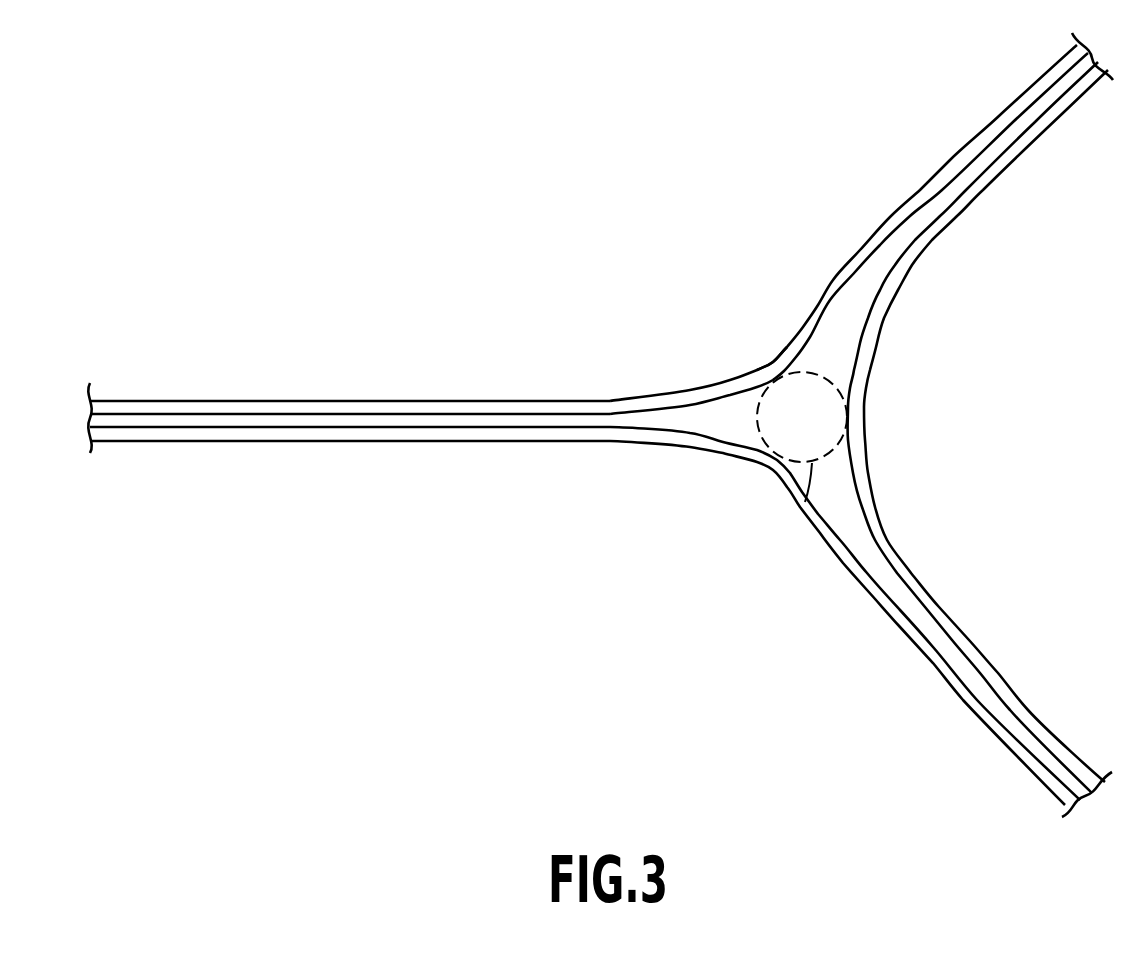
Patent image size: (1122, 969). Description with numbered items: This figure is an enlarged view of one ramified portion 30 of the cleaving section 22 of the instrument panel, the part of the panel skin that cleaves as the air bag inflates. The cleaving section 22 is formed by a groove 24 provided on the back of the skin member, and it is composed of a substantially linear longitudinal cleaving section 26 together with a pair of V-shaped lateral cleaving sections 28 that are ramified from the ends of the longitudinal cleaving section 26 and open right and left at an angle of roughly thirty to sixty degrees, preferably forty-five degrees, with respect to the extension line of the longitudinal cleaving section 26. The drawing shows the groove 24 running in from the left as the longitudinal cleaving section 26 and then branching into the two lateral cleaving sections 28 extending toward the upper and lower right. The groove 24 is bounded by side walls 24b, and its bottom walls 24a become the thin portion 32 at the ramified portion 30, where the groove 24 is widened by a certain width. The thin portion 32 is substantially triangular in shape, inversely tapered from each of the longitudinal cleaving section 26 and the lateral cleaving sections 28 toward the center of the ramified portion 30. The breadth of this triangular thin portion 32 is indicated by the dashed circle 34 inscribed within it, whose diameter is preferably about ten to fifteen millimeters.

The cleaving section 22 is at (548, 205).
The groove 24 is at (323, 418).
The bottom walls 24a is at (420, 421).
The side walls 24b is at (555, 405).
The longitudinal cleaving section 26 is at (212, 398).
The lateral cleaving sections 28 is at (1010, 163).
The ramified portion 30 is at (765, 356).
The thin portion 32 is at (823, 432).
The circle 34 is at (805, 502).